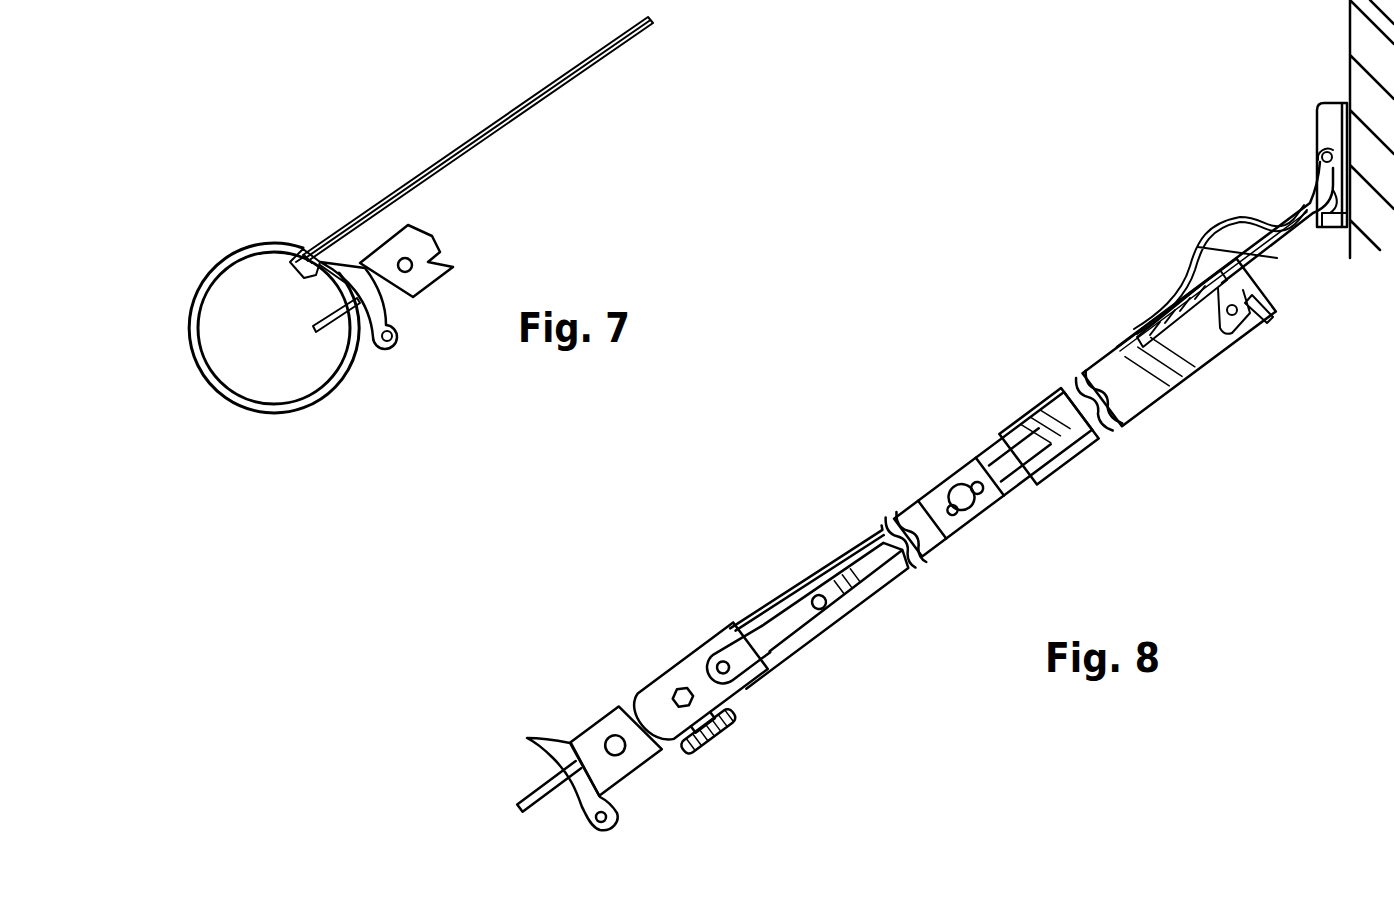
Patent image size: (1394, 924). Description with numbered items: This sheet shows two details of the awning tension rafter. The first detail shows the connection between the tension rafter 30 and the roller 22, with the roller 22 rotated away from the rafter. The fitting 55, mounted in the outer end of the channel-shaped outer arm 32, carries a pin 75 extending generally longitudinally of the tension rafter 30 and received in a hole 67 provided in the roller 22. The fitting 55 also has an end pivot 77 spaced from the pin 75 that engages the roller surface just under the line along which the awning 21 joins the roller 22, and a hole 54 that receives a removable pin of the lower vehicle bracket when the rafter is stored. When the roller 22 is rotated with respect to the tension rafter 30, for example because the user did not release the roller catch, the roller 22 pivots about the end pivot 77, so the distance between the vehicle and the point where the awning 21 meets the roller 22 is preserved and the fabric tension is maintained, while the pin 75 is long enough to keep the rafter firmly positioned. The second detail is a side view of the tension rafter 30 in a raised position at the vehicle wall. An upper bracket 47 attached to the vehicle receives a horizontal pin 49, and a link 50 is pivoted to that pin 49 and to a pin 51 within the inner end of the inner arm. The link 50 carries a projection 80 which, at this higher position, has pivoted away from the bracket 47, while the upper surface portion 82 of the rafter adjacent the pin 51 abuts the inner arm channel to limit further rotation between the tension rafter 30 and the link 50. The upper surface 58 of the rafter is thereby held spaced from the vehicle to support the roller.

In FIG. 7, the awning 21 is at (487, 133).
In FIG. 7, the roller 22 is at (240, 405).
In FIG. 7, the outer arm 32 is at (430, 265).
In FIG. 7, the hole 54 is at (390, 345).
In FIG. 7, the fitting 55 is at (380, 300).
In FIG. 7, the hole 67 is at (348, 308).
In FIG. 7, the pin 75 is at (328, 332).
In FIG. 7, the end pivot 77 is at (323, 254).
In FIG. 8, the tension rafter 30 is at (866, 487).
In FIG. 8, the upper bracket 47 is at (1325, 118).
In FIG. 8, the pin 49 is at (1323, 152).
In FIG. 8, the link 50 is at (1210, 240).
In FIG. 8, the pin 51 is at (1238, 314).
In FIG. 8, the upper surface 58 is at (1310, 205).
In FIG. 8, the projection 80 is at (1320, 214).
In FIG. 8, the upper surface portion 82 is at (1225, 268).